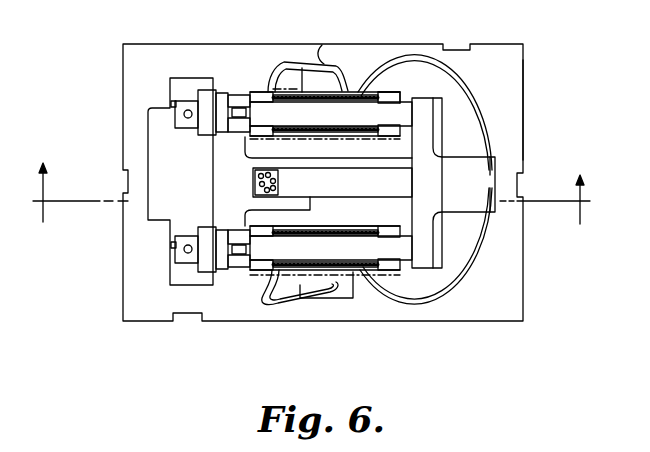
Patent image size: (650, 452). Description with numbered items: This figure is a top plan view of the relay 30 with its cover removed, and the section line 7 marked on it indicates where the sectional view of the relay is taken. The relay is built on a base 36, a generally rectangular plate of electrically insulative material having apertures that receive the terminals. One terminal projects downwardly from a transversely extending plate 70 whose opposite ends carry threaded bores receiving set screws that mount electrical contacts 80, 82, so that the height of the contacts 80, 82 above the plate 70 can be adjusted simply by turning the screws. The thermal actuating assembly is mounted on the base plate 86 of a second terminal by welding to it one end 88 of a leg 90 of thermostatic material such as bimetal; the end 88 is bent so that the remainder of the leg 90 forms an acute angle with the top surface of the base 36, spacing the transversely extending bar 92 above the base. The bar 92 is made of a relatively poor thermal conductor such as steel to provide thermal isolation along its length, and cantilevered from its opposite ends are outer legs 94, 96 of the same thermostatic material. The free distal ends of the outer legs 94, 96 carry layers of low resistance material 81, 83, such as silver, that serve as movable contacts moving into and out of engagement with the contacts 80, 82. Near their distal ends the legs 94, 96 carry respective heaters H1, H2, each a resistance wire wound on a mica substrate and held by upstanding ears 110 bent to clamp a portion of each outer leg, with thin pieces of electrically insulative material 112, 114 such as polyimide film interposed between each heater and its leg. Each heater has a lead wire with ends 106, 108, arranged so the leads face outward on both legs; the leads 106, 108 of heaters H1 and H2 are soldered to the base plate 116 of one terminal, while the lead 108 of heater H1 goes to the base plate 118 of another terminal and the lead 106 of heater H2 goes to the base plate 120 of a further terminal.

The section line 7- 7 is at (311, 182).
The relay 30 is at (223, 42).
The base 36 is at (508, 112).
The plate 70 is at (190, 179).
The electrical contact 80 is at (176, 112).
The layer of low resistance material 81 is at (172, 103).
The electrical contact 82 is at (176, 256).
The layer of low resistance material 83 is at (174, 247).
The base plate 86 is at (298, 160).
The end of leg 88 is at (266, 182).
The leg 90 is at (345, 192).
The bar 92 is at (436, 134).
The outer leg 94 is at (332, 121).
The outer leg 96 is at (336, 256).
The lead wire 106 is at (465, 82).
The lead wire 108 is at (298, 56).
The ears 110 is at (240, 126).
The electrically insulative material 112 is at (346, 90).
The electrically insulative material 114 is at (334, 226).
The base plate 116 is at (492, 206).
The base plate 118 is at (322, 40).
The base plate 120 is at (342, 298).
The heater H1 is at (262, 91).
The heater H2 is at (253, 271).